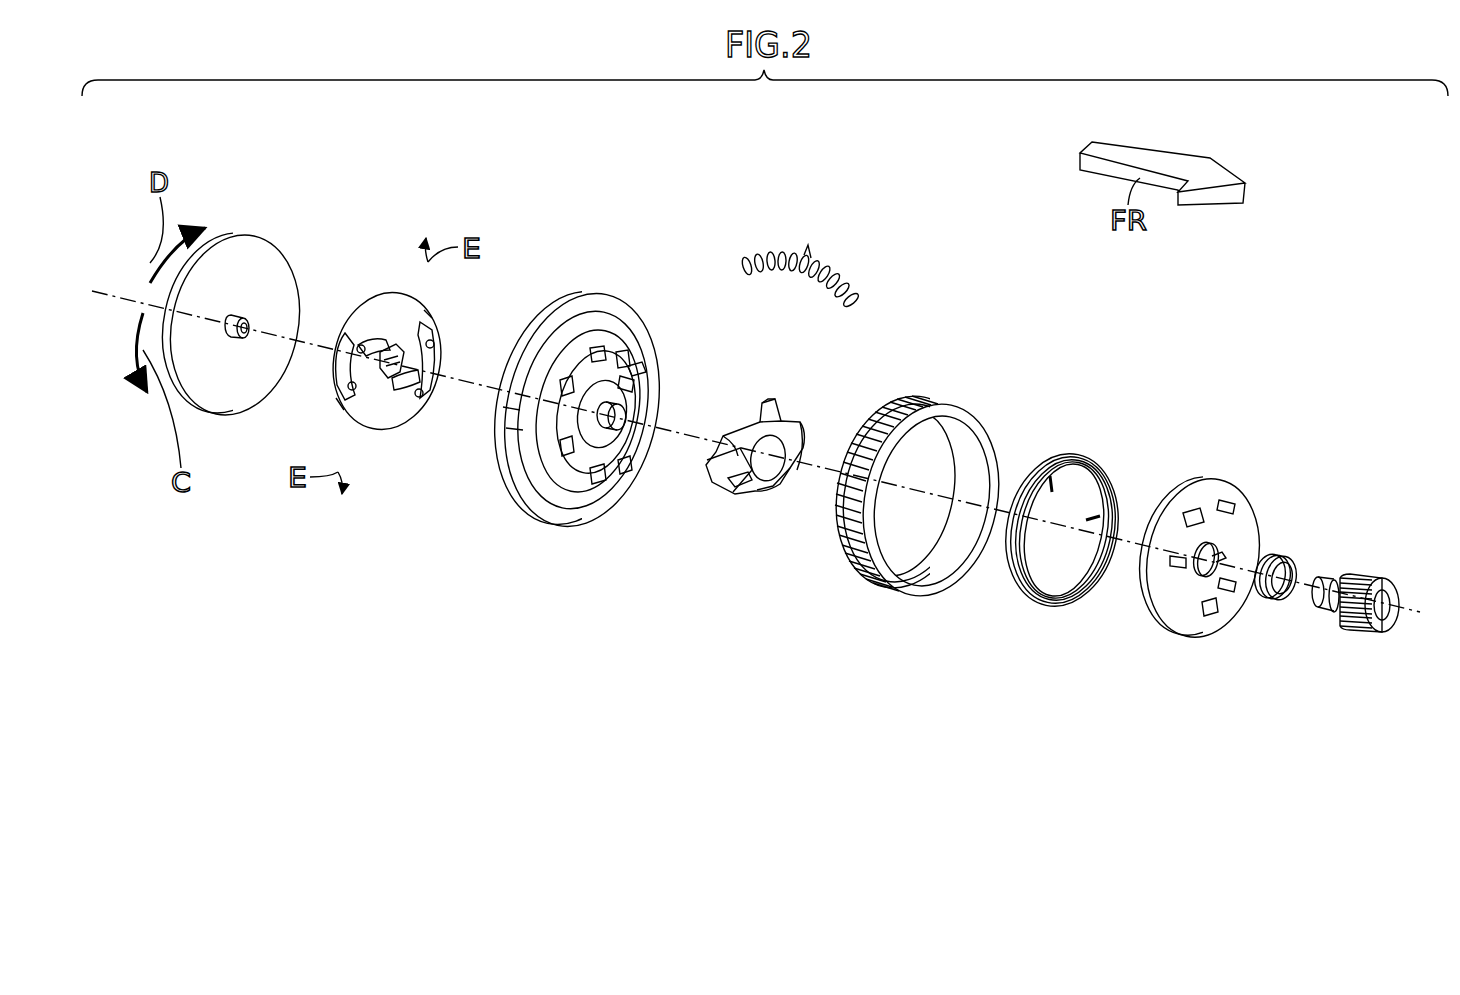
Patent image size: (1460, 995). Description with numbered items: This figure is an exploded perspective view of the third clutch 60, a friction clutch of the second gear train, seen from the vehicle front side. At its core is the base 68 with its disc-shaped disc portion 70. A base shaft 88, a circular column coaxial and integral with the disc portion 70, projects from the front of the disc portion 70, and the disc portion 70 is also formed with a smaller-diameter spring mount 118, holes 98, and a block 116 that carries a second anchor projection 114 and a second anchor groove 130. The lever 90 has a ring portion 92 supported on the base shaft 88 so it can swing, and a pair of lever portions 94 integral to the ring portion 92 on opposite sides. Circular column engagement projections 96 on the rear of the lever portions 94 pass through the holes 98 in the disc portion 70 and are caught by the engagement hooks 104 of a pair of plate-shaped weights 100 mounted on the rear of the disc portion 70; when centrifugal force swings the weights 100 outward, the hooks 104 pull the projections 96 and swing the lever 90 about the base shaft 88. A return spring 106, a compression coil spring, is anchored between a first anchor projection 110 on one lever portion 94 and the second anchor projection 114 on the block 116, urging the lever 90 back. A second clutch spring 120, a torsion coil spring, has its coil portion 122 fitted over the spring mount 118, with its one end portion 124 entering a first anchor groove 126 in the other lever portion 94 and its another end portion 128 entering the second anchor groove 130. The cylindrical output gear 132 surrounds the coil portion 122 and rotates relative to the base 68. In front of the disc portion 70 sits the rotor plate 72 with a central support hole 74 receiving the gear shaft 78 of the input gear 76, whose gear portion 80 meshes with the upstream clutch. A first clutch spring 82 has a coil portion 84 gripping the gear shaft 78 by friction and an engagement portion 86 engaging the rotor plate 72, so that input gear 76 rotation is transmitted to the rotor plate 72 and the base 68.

The third clutch 60 is at (695, 262).
The base 68 is at (578, 278).
The disc portion 70 is at (556, 332).
The spring mount 118 is at (555, 350).
The block 116 is at (618, 400).
The holes 98 is at (598, 365).
The second anchor groove 130 is at (624, 375).
The second anchor projection 114 is at (630, 384).
The base shaft 88 is at (613, 420).
The weights 100 is at (402, 290).
The engagement hooks 104 is at (376, 340).
The lever 90 is at (734, 392).
The ring portion 92 is at (778, 490).
The engagement projections 96 is at (768, 400).
The first anchor projection 110 is at (786, 408).
The lever portions 94 is at (803, 447).
The first anchor groove 126 is at (733, 494).
The return spring 106 is at (807, 248).
The output gear 132 is at (880, 585).
The second clutch spring 120 is at (1065, 430).
The coil portion 122 is at (1012, 562).
The another end portion 128 is at (1098, 480).
The one end portion 124 is at (1085, 520).
The rotor plate 72 is at (1235, 466).
The support hole 74 is at (1205, 560).
The first clutch spring 82 is at (1283, 553).
The engagement portion 86 is at (1300, 570).
The coil portion 84 is at (1270, 595).
The input gear 76 is at (1370, 545).
The gear shaft 78 is at (1322, 612).
The gear portion 80 is at (1390, 575).